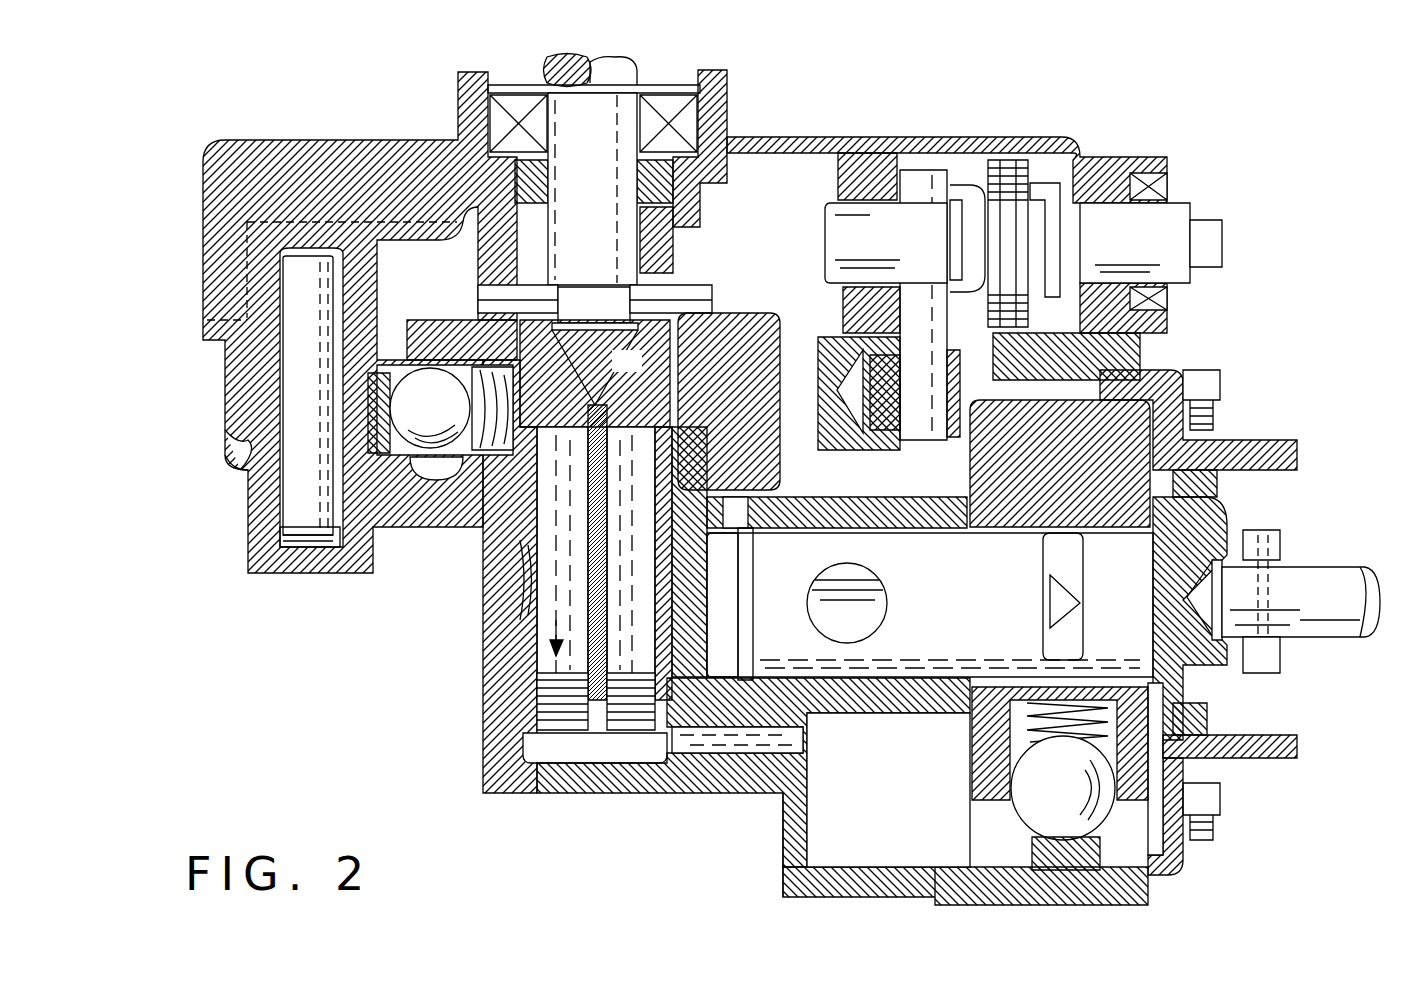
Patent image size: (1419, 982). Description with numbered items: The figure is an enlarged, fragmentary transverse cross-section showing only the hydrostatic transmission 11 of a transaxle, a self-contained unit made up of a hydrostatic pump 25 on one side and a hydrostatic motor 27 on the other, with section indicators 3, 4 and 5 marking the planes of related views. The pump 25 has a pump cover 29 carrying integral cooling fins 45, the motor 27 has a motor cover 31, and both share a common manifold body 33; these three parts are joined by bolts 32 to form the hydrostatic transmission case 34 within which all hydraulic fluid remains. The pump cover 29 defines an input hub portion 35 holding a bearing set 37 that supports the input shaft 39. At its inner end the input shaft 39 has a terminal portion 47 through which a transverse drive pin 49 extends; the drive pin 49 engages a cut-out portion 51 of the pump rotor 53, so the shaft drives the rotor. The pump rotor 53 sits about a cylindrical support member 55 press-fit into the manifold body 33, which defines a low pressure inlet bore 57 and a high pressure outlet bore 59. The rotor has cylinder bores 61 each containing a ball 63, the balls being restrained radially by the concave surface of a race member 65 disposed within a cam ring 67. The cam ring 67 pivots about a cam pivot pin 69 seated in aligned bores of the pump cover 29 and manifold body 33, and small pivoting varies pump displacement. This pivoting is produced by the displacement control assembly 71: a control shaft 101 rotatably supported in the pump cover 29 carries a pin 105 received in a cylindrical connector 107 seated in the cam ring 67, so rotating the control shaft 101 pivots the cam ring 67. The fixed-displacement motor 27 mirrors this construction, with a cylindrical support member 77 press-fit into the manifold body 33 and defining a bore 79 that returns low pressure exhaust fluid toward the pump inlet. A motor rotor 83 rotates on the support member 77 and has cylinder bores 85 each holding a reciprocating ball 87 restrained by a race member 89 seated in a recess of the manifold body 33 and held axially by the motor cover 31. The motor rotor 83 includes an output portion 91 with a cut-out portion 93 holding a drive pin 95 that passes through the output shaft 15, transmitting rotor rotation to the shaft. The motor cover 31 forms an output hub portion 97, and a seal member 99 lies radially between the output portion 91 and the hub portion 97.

The hydrostatic transmission 11 is at (330, 319).
The cooling fins 45 is at (213, 187).
The cam pivot pin 69 is at (300, 505).
The cam ring 67 is at (245, 488).
The input hub portion 35 is at (458, 100).
The bearing set 37 is at (455, 166).
The input shaft 39 is at (615, 242).
The drive pin 49 is at (466, 300).
The cut-out portion 51 is at (690, 287).
The hydrostatic pump 25 is at (757, 110).
The pump cover 29 is at (870, 153).
The hydrostatic transmission case 34 is at (1158, 153).
The control shaft 101 is at (1170, 213).
The pin 105 is at (925, 408).
The cylindrical connector 107 is at (828, 347).
The displacement control assembly 71 is at (967, 177).
The terminal portion 47 is at (600, 345).
The bore 59 is at (630, 508).
The cylindrical support member 55 is at (507, 540).
The bore 57 is at (513, 648).
The manifold body 33 is at (497, 768).
The race member 65 is at (787, 447).
The pump rotor 53 is at (420, 336).
The cylinder bores 61 is at (448, 458).
The ball 63 is at (430, 408).
The cylindrical support member 77 is at (960, 604).
The bore 79 is at (860, 600).
The hydrostatic motor 27 is at (1242, 432).
The bolts 32 is at (1218, 388).
The output portion 91 is at (1225, 505).
The output shaft 15 is at (1338, 580).
The drive pin 95 is at (1280, 540).
The cut-out portion 93 is at (1280, 660).
The motor cover 31 is at (1172, 872).
The output hub portion 97 is at (1228, 758).
The seal member 99 is at (1213, 720).
The motor rotor 83 is at (990, 765).
The cylinder bores 85 is at (1007, 740).
The ball 87 is at (1040, 803).
The race member 89 is at (1030, 857).
The section line 3- 3 is at (595, 830).
The section line 4- 4 is at (1059, 913).
The section line 5- 5 is at (1270, 245).